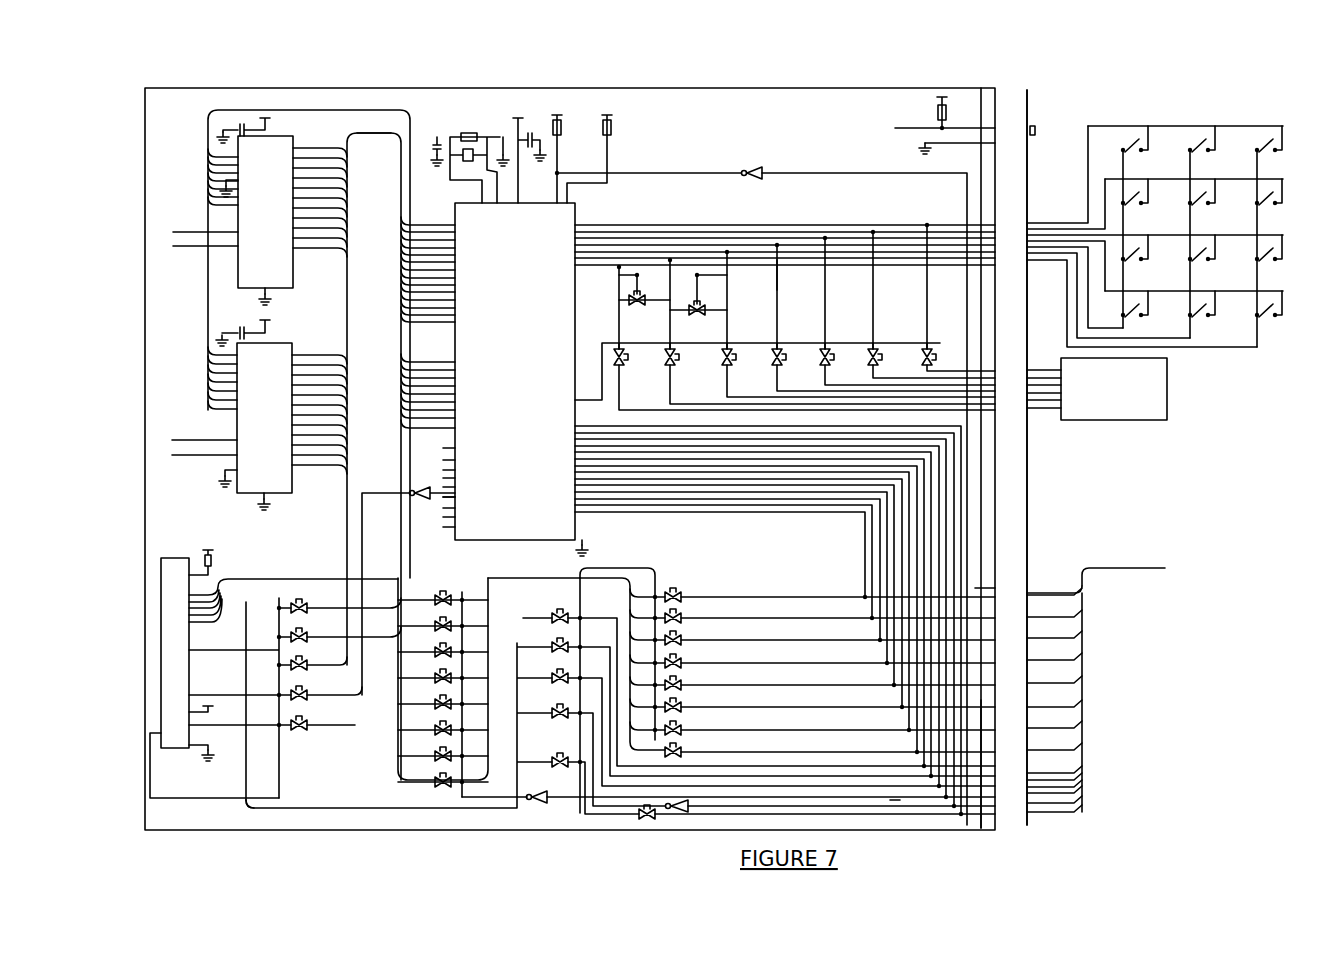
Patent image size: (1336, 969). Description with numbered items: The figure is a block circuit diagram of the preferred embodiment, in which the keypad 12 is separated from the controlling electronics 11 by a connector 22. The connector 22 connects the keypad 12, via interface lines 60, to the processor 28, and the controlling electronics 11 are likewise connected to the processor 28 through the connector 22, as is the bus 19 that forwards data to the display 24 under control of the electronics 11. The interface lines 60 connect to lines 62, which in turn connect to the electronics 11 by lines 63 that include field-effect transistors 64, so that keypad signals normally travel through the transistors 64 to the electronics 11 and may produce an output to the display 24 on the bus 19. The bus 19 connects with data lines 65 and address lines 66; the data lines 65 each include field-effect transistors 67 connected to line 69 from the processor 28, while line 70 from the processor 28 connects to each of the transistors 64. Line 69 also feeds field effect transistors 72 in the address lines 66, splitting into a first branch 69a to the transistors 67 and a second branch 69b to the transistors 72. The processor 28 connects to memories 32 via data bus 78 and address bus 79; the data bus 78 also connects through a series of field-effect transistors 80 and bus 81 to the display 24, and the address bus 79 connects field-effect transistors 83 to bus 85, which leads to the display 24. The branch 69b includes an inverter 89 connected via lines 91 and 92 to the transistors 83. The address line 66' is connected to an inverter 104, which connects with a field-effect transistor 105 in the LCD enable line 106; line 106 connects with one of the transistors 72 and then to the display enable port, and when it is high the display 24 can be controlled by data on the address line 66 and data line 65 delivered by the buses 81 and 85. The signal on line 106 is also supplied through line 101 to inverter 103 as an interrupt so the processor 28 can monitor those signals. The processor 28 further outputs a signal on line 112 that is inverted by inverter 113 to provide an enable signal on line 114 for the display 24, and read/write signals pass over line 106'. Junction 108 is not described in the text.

The controlling electronics 11 is at (1165, 410).
The keypad 12 is at (1260, 350).
The bus 19 is at (1160, 568).
The connector 22 is at (1040, 155).
The display 24 is at (182, 560).
The processor 28 is at (513, 393).
The memories 32 is at (275, 216).
The interface lines 60 is at (1046, 222).
The lines 62 is at (1045, 370).
The lines 63 is at (790, 285).
The field-effect transistors 64 is at (612, 350).
The data lines 65 is at (1040, 595).
The address lines 66 is at (1092, 700).
The address line 66' is at (911, 834).
The field-effect transistors 67 is at (682, 595).
The line 69 is at (600, 548).
The first branch 69a is at (660, 570).
The second branch 69b is at (560, 578).
The line 70 is at (598, 358).
The field effect transistors 72 is at (548, 614).
The data bus 78 is at (401, 293).
The address bus 79 is at (401, 176).
The field-effect transistors 80 is at (430, 593).
The bus 81 is at (272, 578).
The field-effect transistors 83 is at (312, 602).
The bus 85 is at (246, 770).
The inverter 89 is at (530, 805).
The line 91 is at (340, 805).
The line 92 is at (279, 748).
The line 101 is at (968, 468).
The inverter 103 is at (742, 172).
The inverter 104 is at (680, 820).
The field-effect transistor 105 is at (665, 810).
The LCD enable line 106 is at (1017, 783).
The line 106' is at (405, 445).
The junction 108 is at (962, 590).
The line 112 is at (455, 497).
The inverter 113 is at (423, 505).
The line 114 is at (343, 578).